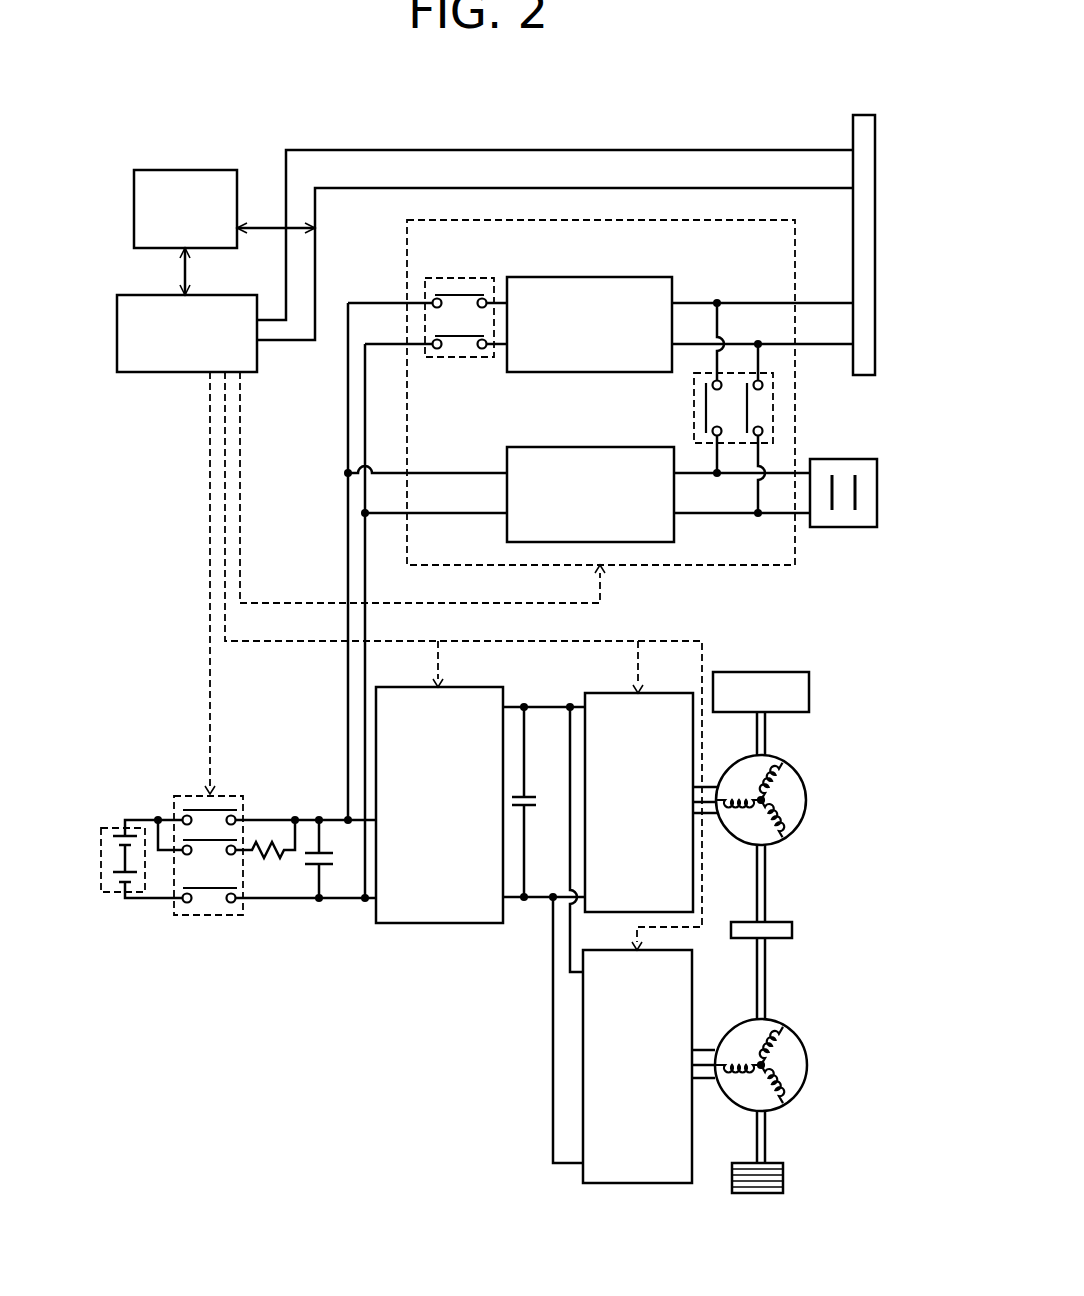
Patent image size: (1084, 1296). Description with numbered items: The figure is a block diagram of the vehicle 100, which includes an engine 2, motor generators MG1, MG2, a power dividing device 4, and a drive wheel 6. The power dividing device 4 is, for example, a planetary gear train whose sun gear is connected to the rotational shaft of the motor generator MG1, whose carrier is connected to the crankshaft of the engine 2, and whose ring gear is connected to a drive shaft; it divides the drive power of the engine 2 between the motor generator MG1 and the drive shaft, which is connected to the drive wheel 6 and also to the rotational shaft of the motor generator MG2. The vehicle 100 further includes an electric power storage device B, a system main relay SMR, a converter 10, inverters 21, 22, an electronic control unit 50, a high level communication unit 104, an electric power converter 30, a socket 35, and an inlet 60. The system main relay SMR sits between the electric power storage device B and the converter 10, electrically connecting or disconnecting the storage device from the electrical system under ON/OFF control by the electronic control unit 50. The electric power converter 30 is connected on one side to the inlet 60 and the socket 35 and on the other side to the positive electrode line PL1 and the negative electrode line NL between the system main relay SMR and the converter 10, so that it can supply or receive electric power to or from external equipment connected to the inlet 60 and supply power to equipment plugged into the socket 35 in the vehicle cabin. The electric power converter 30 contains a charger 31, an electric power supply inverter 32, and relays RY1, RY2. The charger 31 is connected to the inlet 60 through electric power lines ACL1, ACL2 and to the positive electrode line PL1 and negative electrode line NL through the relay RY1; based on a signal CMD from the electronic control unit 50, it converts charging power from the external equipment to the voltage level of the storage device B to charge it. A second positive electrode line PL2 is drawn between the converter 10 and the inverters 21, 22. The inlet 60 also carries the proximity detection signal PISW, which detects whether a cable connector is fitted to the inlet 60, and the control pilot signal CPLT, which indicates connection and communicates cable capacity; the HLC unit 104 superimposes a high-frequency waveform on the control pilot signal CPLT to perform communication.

The vehicle 100 is at (264, 110).
The high level communication (HLC) unit 104 is at (160, 169).
The electronic control unit 50 is at (160, 295).
The inlet 60 is at (863, 114).
The electric power converter 30 is at (407, 250).
The charger 31 is at (590, 277).
The electric power supply inverter 32 is at (590, 446).
The socket 35 is at (843, 458).
The converter 10 is at (459, 687).
The inverter 21 is at (664, 692).
The inverter 22 is at (664, 1185).
The engine 2 is at (780, 672).
The power dividing device 4 is at (782, 920).
The drive wheel 6 is at (775, 1163).
The relay RY1 is at (459, 277).
The relay RY2 is at (694, 406).
The system main relay SMR is at (187, 796).
The electric power storage device B is at (104, 828).
The motor generator MG1 is at (797, 828).
The motor generator MG2 is at (797, 1093).
The positive electrode line PL1 is at (308, 819).
The positive electrode line PL2 is at (546, 705).
The negative electrode line NL is at (309, 900).
The signal CMD is at (289, 588).
The proximity detection signal PISW is at (806, 135).
The control pilot signal CPLT is at (806, 174).
The electric power line ACL1 is at (823, 301).
The electric power line ACL2 is at (826, 347).